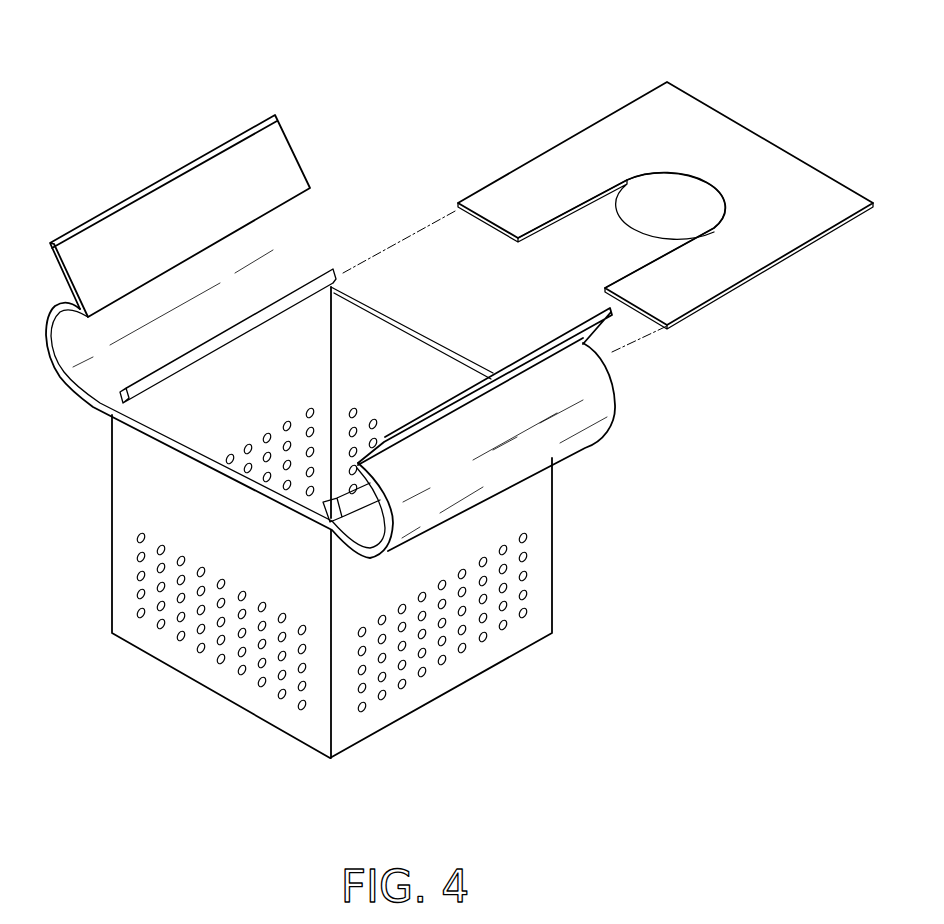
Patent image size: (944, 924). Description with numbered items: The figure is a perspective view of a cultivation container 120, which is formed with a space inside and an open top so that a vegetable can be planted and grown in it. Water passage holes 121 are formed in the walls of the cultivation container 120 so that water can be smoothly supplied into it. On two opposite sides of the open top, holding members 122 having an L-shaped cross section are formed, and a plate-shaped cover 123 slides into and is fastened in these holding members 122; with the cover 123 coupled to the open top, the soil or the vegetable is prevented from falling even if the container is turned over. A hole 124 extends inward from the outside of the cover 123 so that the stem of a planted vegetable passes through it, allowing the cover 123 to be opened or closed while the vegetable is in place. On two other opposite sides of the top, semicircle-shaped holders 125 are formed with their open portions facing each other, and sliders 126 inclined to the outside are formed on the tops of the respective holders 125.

The cultivation container 120 is at (538, 520).
The water passage holes 121 is at (506, 624).
The holding members 122 is at (143, 402).
The cover 123 is at (793, 177).
The hole 124 is at (653, 212).
The semicircle-shaped holders 125 is at (258, 237).
The sliders 126 is at (163, 197).